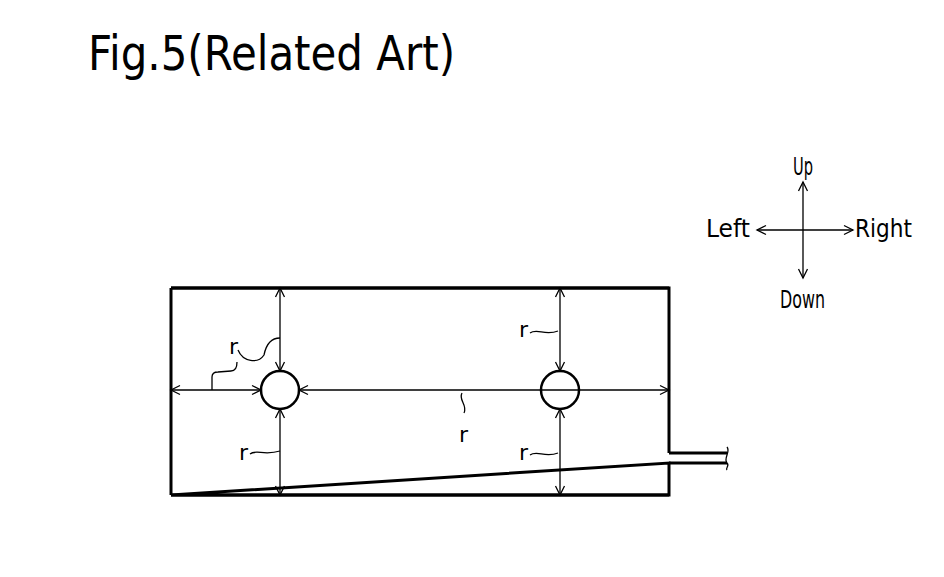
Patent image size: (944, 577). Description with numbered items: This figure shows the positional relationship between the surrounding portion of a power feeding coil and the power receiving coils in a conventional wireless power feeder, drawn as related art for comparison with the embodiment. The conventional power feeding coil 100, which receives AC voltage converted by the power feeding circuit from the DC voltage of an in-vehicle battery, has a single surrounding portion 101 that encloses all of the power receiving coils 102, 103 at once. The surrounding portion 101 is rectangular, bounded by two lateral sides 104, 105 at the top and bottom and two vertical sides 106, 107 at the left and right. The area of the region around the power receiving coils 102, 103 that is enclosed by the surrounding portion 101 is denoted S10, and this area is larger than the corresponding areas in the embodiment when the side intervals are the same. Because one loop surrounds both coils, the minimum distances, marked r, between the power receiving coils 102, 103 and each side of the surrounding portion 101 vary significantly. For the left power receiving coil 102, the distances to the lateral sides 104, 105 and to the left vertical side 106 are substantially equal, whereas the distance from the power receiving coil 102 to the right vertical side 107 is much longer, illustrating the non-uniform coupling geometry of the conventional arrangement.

The power feeding coil 100 is at (421, 364).
The surrounding portion 101 is at (619, 287).
The power receiving coil 102 is at (291, 376).
The power receiving coil 103 is at (572, 377).
The lateral side 104 is at (229, 287).
The lateral side 105 is at (238, 498).
The vertical side 106 is at (169, 450).
The vertical side 107 is at (672, 420).
The area S10 is at (426, 297).